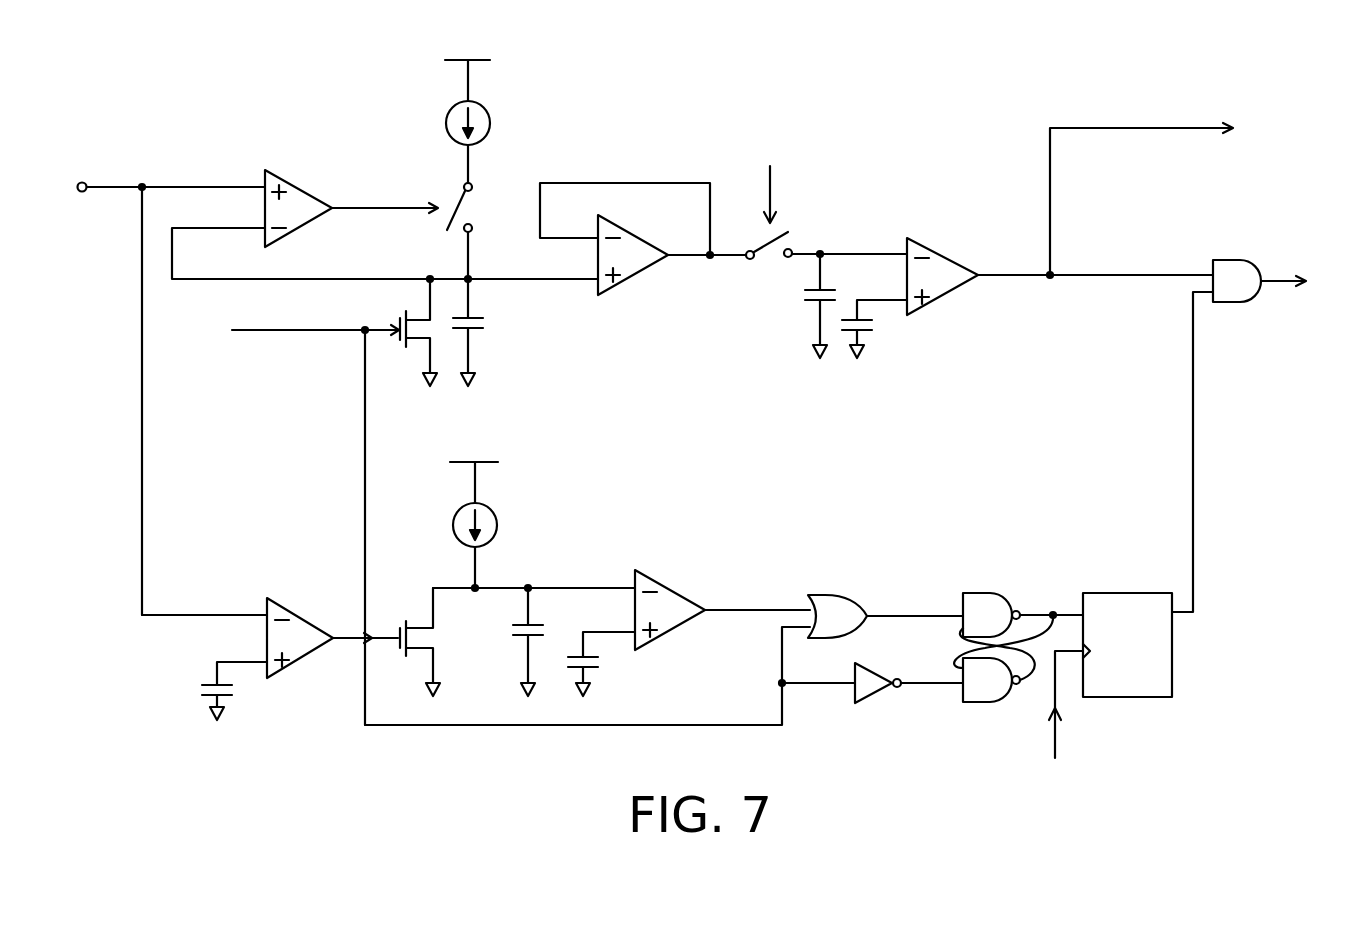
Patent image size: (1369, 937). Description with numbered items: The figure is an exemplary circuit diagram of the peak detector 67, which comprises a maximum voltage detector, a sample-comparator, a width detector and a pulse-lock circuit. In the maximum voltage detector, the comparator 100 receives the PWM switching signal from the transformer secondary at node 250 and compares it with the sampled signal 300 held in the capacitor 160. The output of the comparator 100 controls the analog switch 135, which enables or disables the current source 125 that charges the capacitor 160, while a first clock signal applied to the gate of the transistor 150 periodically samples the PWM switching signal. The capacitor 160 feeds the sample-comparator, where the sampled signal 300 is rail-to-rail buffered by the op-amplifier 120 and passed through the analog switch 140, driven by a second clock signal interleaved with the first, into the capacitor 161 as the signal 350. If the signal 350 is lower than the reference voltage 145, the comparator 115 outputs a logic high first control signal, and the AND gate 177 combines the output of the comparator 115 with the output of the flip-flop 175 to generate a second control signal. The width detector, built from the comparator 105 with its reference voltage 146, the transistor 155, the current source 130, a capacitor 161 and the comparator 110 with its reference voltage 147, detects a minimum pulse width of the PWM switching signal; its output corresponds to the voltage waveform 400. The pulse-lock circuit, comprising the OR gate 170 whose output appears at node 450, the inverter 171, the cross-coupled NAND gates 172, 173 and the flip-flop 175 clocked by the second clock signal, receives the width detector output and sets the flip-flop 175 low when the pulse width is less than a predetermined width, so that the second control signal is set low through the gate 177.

The peak detector 67 is at (1005, 70).
The comparator 100 is at (305, 183).
The comparator 105 is at (308, 613).
The comparator 110 is at (680, 583).
The comparator 115 is at (942, 240).
The op-amplifier 120 is at (643, 274).
The current source 125 is at (493, 120).
The current source 130 is at (505, 528).
The analog switch 135 is at (480, 186).
The analog switch 140 is at (784, 226).
The reference voltage 145 is at (882, 330).
The reference voltage 146 is at (192, 690).
The reference voltage 147 is at (600, 663).
The transistor 150 is at (398, 327).
The transistor 155 is at (405, 622).
The capacitor 160 is at (492, 323).
The capacitor 161 is at (803, 300).
The OR gate 170 is at (830, 588).
The inverter 171 is at (870, 710).
The NAND gate 172 is at (978, 586).
The NAND gate 173 is at (975, 710).
The flip-flop 175 is at (1137, 592).
The AND gate 177 is at (1258, 256).
The node 250 is at (104, 180).
The sampled signal 300 is at (478, 270).
The signal 350 is at (815, 247).
The voltage waveform 400 is at (500, 580).
The node 450 is at (912, 605).